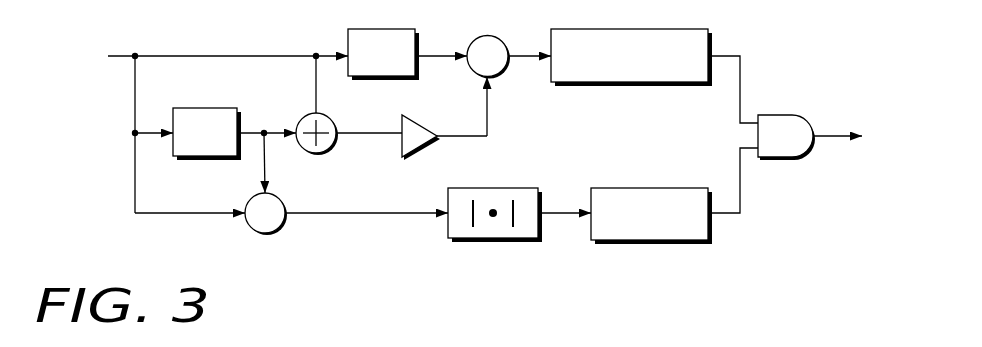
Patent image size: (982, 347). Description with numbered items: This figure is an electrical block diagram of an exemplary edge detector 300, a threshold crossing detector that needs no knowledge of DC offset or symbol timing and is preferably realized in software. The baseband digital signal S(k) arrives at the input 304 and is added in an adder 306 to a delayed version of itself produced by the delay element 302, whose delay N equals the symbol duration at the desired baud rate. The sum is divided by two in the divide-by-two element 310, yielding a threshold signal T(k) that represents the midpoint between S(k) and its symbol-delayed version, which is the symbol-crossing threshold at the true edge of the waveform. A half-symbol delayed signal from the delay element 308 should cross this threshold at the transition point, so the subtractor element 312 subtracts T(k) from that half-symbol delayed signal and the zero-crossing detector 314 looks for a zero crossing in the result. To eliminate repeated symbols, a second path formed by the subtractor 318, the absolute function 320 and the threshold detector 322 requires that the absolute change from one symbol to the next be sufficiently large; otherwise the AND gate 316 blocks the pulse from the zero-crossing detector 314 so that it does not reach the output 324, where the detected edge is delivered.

The edge detector 300 is at (163, 264).
The delay element 302 is at (195, 108).
The input 304 is at (119, 54).
The adder 306 is at (324, 152).
The delay element 308 is at (369, 29).
The divide-by-two element 310 is at (426, 123).
The subtractor element 312 is at (506, 36).
The zero-crossing detector 314 is at (668, 84).
The AND gate 316 is at (782, 158).
The subtractor 318 is at (281, 230).
The absolute function 320 is at (470, 244).
The threshold detector 322 is at (622, 186).
The output 324 is at (832, 129).